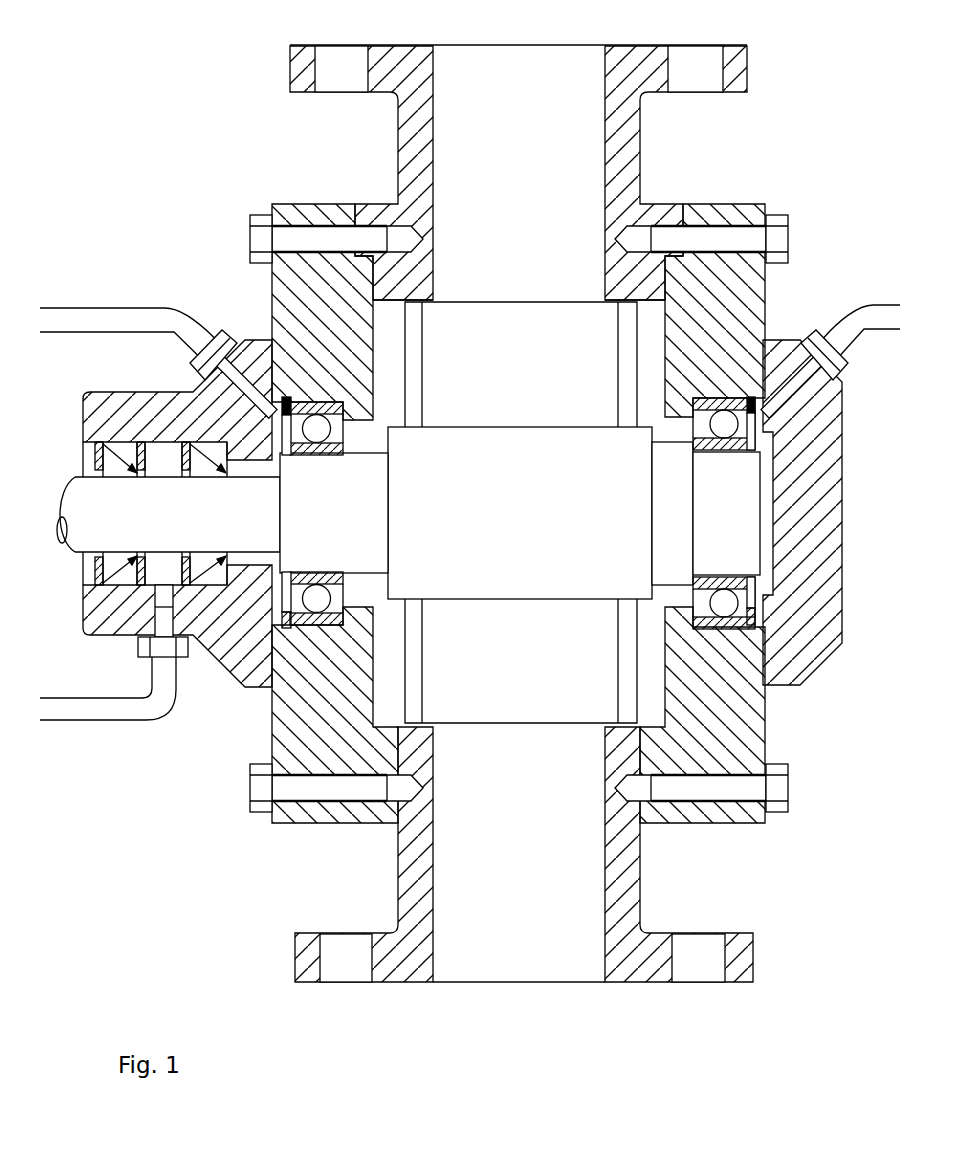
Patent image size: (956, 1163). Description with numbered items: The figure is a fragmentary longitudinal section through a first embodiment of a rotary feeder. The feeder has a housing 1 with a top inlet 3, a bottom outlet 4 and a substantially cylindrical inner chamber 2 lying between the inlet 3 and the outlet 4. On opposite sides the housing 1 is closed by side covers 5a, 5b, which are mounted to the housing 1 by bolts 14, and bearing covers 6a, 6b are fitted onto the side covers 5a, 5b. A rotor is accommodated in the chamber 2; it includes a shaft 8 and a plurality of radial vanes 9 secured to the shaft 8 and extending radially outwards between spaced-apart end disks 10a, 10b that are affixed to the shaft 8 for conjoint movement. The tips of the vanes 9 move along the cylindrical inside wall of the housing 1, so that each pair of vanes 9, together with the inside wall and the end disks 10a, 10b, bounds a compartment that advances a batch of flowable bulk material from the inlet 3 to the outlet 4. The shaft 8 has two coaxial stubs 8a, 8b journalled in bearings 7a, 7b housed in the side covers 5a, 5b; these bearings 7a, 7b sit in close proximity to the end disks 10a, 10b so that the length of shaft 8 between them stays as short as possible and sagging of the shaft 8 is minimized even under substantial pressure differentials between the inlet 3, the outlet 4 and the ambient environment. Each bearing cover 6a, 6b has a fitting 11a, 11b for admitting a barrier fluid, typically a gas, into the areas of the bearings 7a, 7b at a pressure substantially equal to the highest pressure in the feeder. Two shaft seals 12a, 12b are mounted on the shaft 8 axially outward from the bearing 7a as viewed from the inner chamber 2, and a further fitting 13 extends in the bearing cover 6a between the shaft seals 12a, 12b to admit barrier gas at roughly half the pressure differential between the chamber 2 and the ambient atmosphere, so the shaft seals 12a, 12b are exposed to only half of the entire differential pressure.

The housing 1 is at (747, 46).
The inner chamber 2 is at (647, 332).
The top inlet 3 is at (531, 117).
The bottom outlet 4 is at (512, 943).
The side cover 5a is at (312, 812).
The side cover 5b is at (712, 812).
The bearing cover 6a is at (222, 665).
The bearing cover 6b is at (820, 648).
The bearing 7a is at (320, 615).
The bearing 7b is at (717, 615).
The shaft 8 is at (771, 517).
The shaft stub 8a is at (337, 530).
The shaft stub 8b is at (726, 513).
The radial vanes 9 is at (510, 727).
The end disk 10a is at (422, 670).
The end disk 10b is at (618, 670).
The fitting 11a is at (212, 350).
The fitting 11b is at (840, 352).
The shaft seal 12a is at (133, 455).
The shaft seal 12b is at (210, 452).
The further fitting 13 is at (165, 648).
The bolts 14 is at (790, 238).